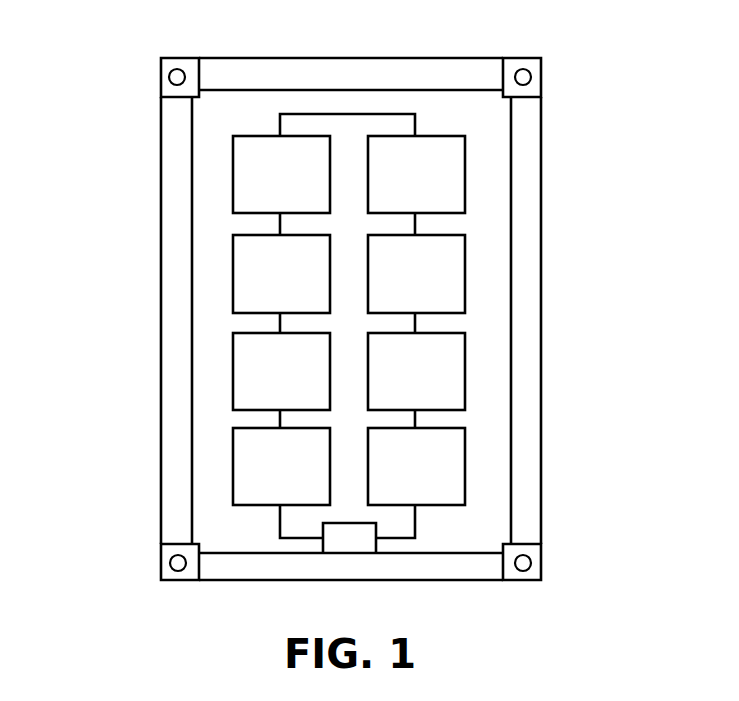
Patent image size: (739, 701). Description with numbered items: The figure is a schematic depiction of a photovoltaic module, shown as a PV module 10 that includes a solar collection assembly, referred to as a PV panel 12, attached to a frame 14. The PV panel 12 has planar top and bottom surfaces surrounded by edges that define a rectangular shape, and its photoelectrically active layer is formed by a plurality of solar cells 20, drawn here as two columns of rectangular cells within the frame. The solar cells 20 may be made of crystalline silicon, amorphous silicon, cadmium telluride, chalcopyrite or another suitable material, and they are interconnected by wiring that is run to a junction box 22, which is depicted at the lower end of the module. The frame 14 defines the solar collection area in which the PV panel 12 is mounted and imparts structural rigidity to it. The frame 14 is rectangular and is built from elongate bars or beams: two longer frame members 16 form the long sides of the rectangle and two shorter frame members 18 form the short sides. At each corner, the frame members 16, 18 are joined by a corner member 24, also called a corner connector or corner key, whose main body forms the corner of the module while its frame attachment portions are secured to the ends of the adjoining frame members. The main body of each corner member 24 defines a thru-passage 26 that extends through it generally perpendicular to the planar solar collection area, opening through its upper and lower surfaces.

The PV module 10 is at (333, 323).
The PV panel 12 is at (315, 366).
The frame 14 is at (344, 323).
The longer frame members 16 is at (160, 385).
The shorter frame members 18 is at (334, 58).
The solar cell 20 is at (226, 203).
The junction box 22 is at (336, 541).
The corner member 24 is at (161, 80).
The thru-passage 26 is at (186, 70).